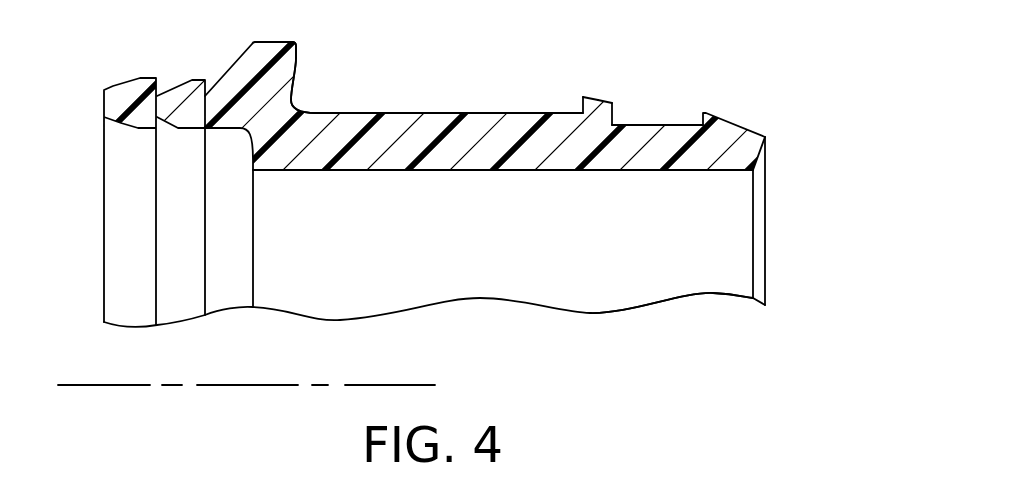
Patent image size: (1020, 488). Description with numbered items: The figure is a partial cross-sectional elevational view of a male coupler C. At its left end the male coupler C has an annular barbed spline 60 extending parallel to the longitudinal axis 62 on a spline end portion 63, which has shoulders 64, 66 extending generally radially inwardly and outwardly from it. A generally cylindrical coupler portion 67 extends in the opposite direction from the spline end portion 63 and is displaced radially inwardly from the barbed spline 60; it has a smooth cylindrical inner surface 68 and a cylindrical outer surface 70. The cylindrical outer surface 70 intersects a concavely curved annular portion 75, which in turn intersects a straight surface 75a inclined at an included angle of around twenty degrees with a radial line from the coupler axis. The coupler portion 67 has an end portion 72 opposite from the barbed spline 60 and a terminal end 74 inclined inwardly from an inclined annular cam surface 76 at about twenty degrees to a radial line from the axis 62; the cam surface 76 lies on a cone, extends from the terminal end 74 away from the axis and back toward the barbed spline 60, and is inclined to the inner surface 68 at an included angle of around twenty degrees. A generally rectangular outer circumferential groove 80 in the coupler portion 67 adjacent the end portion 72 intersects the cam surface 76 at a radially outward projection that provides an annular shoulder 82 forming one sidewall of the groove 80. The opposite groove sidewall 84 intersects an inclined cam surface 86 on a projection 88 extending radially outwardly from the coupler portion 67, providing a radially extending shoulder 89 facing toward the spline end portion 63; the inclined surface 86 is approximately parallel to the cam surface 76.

The annular barbed spline 60 is at (130, 89).
The longitudinal axis 62 is at (100, 386).
The spline end portion 63 is at (263, 86).
The shoulder 64 is at (251, 150).
The shoulder 66 is at (251, 48).
The coupler portion 67 is at (475, 128).
The cylindrical inner surface 68 is at (465, 170).
The cylindrical outer surface 70 is at (403, 113).
The end portion 72 is at (745, 156).
The terminal end 74 is at (768, 141).
The concavely curved annular portion 75 is at (297, 101).
The straight surface 75a is at (301, 58).
The inclined annular cam surface 76 is at (758, 130).
The outer circumferential groove 80 is at (650, 125).
The annular shoulder 82 is at (699, 113).
The groove sidewall 84 is at (616, 112).
The inclined cam surface 86 is at (601, 100).
The projection 88 is at (594, 100).
The radially extending shoulder 89 is at (583, 106).
The male coupler C is at (722, 300).